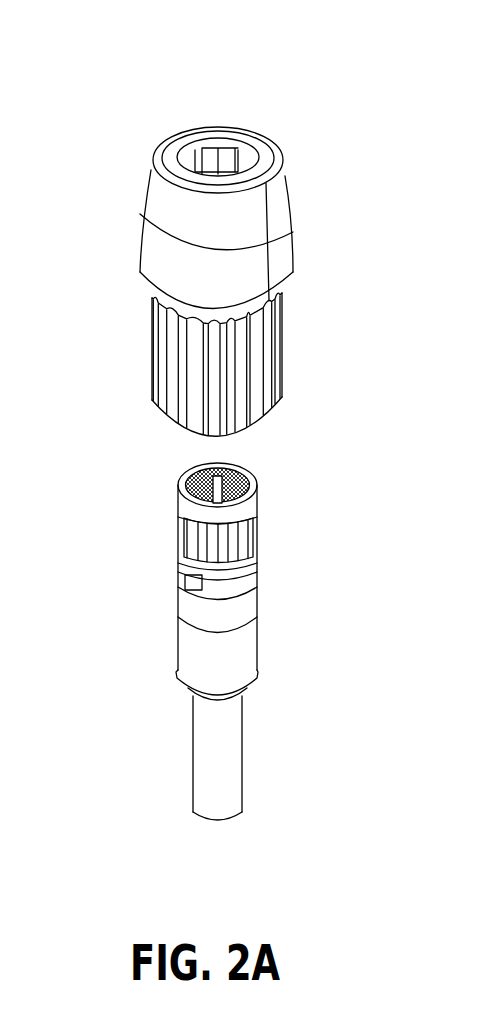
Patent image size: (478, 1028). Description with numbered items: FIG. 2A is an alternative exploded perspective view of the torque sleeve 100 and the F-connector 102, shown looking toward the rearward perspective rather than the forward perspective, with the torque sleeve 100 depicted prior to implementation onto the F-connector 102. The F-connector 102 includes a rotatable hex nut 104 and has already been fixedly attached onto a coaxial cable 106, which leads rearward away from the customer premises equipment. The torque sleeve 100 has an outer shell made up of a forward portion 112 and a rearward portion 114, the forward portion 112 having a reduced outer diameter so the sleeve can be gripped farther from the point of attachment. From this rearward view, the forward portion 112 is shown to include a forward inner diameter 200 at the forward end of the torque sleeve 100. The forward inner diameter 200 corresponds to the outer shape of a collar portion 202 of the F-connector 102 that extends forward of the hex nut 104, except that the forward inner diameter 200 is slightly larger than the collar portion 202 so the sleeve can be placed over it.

The torque sleeve 100 is at (358, 108).
The forward inner diameter 200 is at (247, 140).
The forward portion 112 is at (119, 206).
The rearward portion 114 is at (119, 323).
The F-connector 102 is at (300, 640).
The collar portion 202 is at (252, 476).
The rotatable hex nut 104 is at (258, 528).
The coaxial cable 106 is at (243, 777).